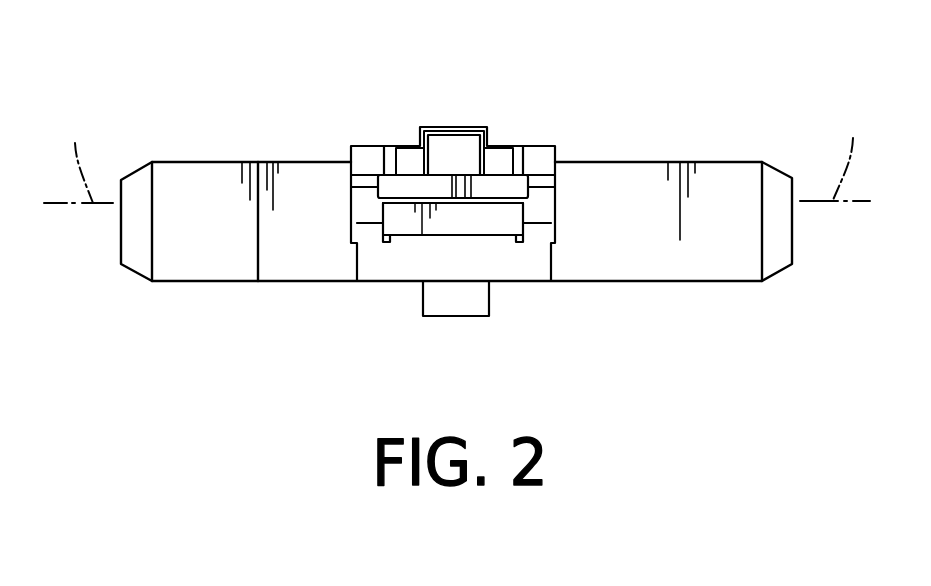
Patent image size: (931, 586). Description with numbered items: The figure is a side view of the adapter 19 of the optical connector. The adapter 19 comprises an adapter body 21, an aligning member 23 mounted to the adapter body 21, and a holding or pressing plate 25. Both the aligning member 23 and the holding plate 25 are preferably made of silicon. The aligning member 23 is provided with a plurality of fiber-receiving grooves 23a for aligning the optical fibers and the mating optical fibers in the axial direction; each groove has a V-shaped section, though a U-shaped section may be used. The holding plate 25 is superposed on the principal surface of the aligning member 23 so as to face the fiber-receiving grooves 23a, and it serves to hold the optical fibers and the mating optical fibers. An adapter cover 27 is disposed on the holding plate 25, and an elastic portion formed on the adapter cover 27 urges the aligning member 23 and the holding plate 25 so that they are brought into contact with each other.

The adapter 19 is at (457, 195).
The adapter body 21 is at (643, 282).
The aligning member 23 is at (428, 233).
The fiber-receiving grooves 23a is at (480, 203).
The holding plate 25 is at (491, 183).
The adapter cover 27 is at (410, 158).